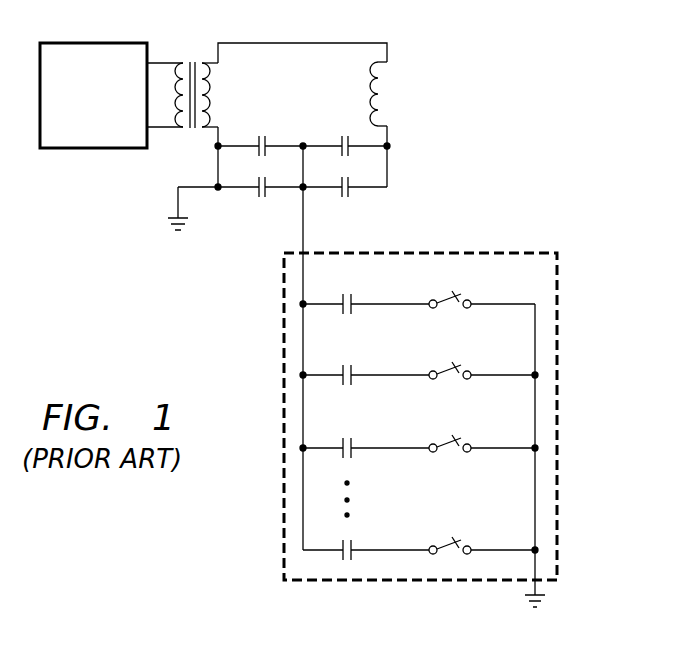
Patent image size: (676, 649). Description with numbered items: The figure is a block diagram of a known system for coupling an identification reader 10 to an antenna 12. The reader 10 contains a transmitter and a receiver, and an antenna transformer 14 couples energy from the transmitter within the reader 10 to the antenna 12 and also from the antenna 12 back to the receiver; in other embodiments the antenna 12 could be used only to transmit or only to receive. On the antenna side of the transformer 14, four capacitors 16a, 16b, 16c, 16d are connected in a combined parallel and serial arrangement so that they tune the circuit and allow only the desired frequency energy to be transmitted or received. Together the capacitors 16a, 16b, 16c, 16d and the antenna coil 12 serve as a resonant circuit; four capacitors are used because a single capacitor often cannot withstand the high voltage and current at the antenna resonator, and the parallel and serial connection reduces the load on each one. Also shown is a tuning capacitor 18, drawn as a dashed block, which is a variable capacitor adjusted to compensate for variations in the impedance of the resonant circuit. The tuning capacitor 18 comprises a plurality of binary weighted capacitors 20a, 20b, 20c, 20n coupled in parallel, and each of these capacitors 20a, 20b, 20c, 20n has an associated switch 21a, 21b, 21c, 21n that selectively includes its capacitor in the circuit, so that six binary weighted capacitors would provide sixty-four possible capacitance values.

The reader 10 is at (81, 115).
The antenna 12 is at (380, 93).
The antenna transformer 14 is at (186, 60).
The capacitor 16a is at (261, 133).
The capacitor 16b is at (346, 133).
The capacitor 16c is at (258, 197).
The capacitor 16d is at (349, 199).
The tuning capacitor 18 is at (557, 291).
The binary weighted capacitor 20a is at (353, 299).
The binary weighted capacitor 20b is at (353, 370).
The binary weighted capacitor 20c is at (353, 444).
The binary weighted capacitor 20n is at (353, 544).
The switch 21a is at (465, 298).
The switch 21b is at (465, 369).
The switch 21c is at (456, 440).
The switch 21n is at (465, 543).